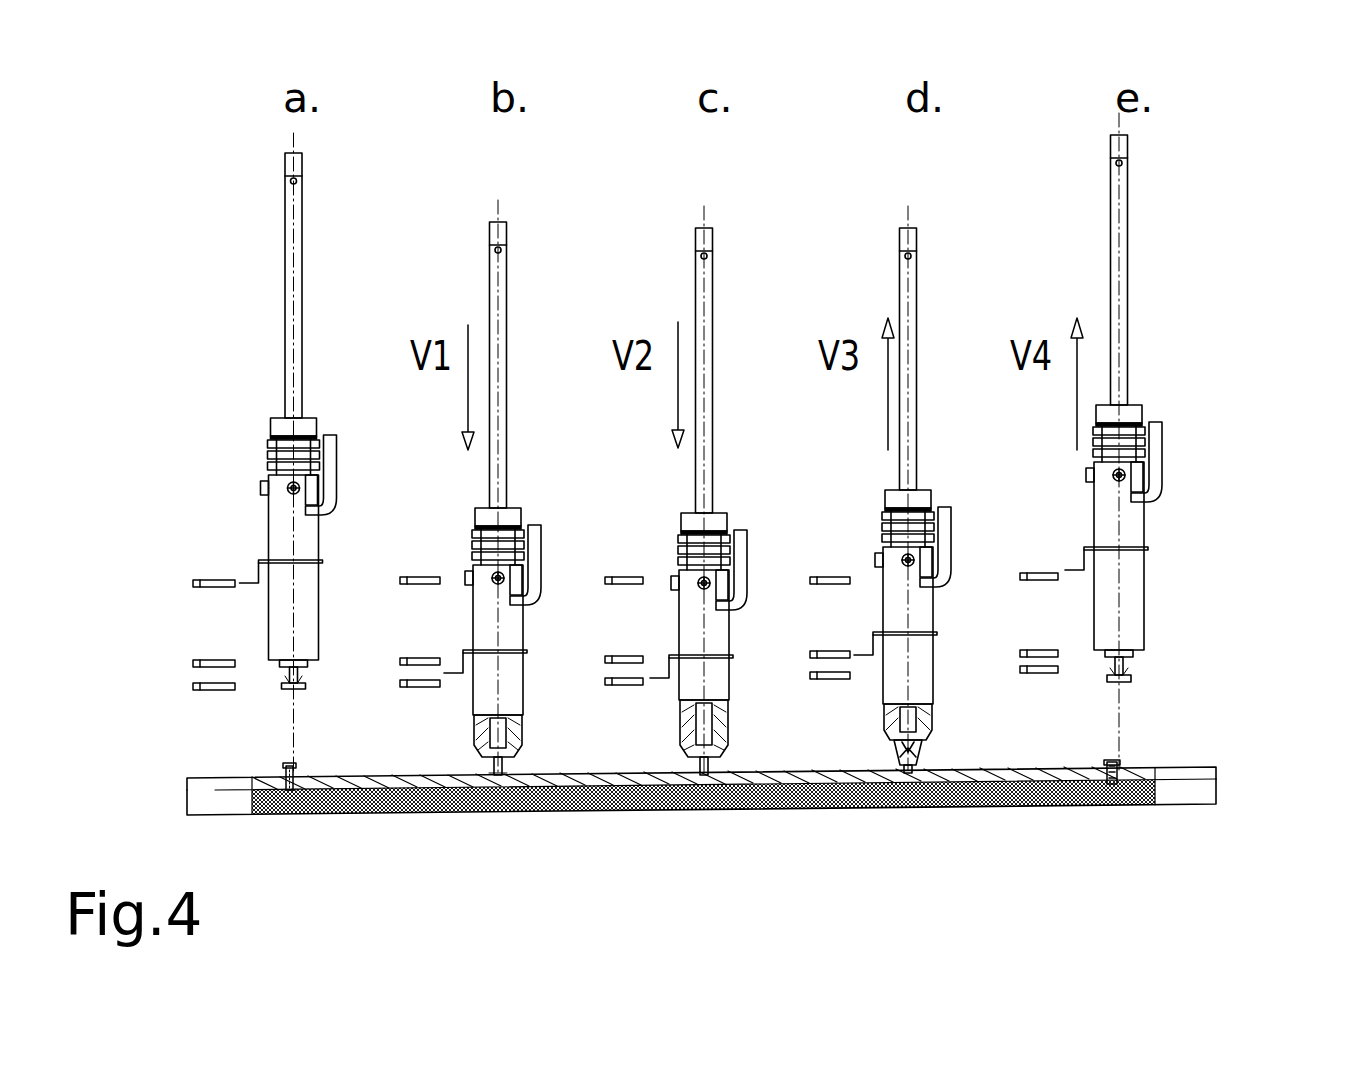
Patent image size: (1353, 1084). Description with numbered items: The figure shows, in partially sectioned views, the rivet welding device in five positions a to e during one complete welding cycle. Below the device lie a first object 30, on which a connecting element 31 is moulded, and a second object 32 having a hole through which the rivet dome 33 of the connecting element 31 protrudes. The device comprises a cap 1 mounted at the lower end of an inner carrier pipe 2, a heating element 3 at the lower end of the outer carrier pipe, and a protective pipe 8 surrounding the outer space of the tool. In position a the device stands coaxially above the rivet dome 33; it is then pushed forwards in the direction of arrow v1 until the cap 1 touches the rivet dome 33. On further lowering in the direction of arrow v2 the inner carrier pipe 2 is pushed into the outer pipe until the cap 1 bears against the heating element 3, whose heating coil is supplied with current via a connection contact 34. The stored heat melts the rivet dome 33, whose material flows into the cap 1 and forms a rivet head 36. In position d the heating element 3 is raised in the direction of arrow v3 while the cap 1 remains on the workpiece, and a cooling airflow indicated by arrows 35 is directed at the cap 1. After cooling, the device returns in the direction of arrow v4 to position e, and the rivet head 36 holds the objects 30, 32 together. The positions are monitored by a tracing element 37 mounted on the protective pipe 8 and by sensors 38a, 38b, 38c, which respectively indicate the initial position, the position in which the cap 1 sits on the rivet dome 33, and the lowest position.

The cap 1 is at (300, 692).
The carrier pipe 2 is at (299, 310).
The heating element 3 is at (522, 742).
The protective pipe 8 is at (303, 535).
The first object 30 is at (197, 808).
The connecting element 31 is at (360, 765).
The second object 32 is at (200, 783).
The rivet dome 33 is at (290, 765).
The connection contact 34 is at (330, 455).
The arrows 35 is at (927, 757).
The rivet head 36 is at (1120, 764).
The tracing element 37 is at (233, 580).
The sensor 38a is at (193, 583).
The sensor 38b is at (193, 663).
The sensor 38c is at (193, 687).